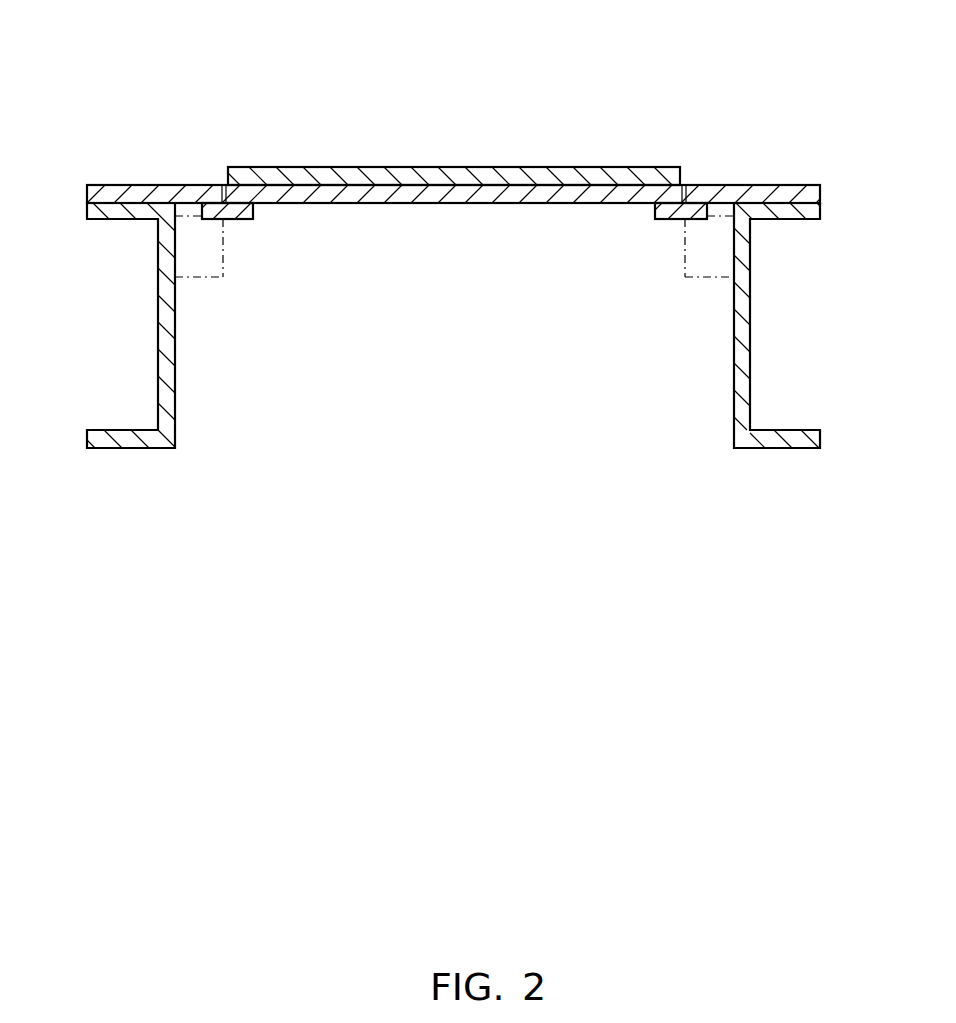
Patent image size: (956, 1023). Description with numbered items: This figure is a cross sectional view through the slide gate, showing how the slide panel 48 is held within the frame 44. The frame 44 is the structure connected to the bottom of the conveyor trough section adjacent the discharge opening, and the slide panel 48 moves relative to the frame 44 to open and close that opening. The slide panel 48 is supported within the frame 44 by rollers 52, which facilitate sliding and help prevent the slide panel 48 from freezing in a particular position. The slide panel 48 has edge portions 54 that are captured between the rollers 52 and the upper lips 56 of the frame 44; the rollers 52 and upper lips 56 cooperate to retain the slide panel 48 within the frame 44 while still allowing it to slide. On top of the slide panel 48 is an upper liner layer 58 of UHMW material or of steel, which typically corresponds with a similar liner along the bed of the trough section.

The frame 44 is at (122, 448).
The slide panel 48 is at (447, 203).
The rollers 52 is at (223, 260).
The edge portions 54 is at (222, 203).
The upper lips 56 is at (132, 185).
The upper liner layer 58 is at (368, 167).